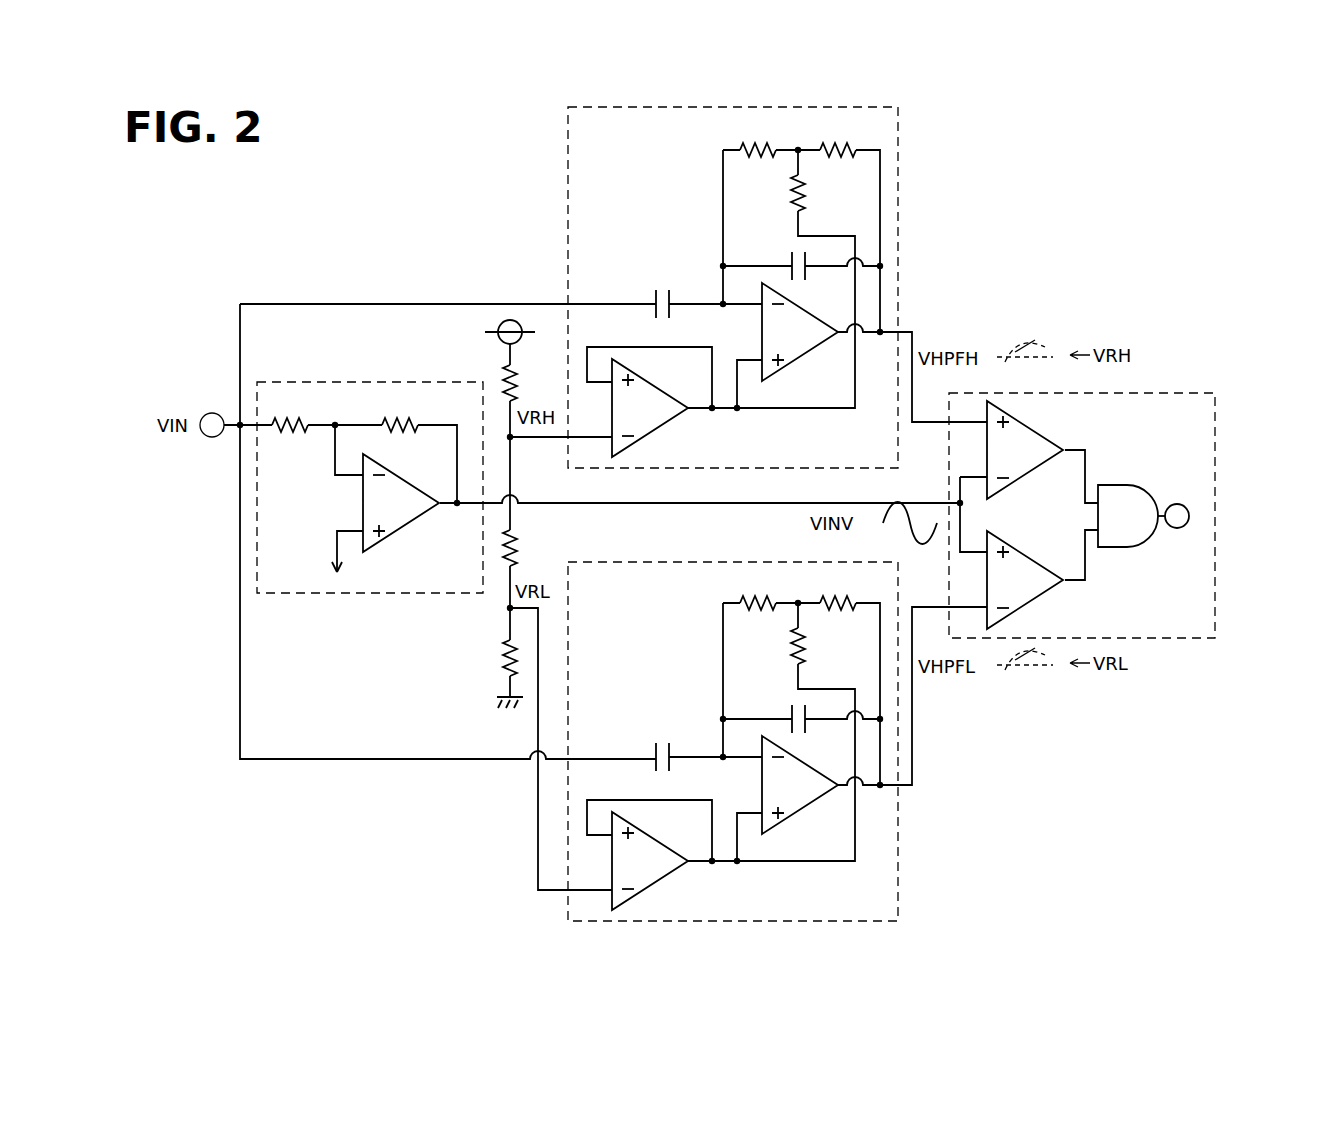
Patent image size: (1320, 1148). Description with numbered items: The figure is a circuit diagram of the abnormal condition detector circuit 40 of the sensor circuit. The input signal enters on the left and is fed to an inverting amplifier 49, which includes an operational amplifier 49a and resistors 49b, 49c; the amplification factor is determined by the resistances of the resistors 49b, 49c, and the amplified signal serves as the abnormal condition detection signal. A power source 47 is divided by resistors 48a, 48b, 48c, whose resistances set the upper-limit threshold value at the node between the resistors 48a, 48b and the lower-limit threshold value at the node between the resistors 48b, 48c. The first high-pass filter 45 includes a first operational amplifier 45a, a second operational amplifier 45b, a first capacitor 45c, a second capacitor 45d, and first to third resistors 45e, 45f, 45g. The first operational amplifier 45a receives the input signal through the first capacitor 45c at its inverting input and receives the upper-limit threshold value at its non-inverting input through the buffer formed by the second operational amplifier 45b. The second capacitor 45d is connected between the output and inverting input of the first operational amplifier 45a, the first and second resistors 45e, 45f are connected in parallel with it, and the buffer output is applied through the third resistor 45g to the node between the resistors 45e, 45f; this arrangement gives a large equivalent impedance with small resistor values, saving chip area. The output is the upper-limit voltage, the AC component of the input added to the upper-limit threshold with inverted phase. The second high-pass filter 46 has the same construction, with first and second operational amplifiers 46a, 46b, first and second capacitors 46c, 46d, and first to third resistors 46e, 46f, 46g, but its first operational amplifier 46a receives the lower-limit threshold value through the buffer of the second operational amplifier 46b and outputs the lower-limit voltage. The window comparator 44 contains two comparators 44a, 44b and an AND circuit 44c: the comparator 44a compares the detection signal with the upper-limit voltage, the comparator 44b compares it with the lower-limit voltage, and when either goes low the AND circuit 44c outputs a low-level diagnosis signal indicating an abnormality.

The abnormal condition detector circuit 40 is at (432, 205).
The window comparator 44 is at (1215, 617).
The comparator 44a is at (1035, 421).
The comparator 44b is at (1035, 553).
The AND circuit 44c is at (1118, 548).
The first high-pass filter 45 is at (898, 148).
The first operational amplifier 45a is at (806, 354).
The second operational amplifier 45b is at (667, 436).
The first capacitor 45c is at (660, 312).
The second capacitor 45d is at (810, 276).
The first resistor 45e is at (748, 152).
The second resistor 45f is at (838, 156).
The third resistor 45g is at (802, 210).
The second high-pass filter 46 is at (898, 863).
The first operational amplifier 46a is at (806, 807).
The second operational amplifier 46b is at (667, 889).
The first capacitor 46c is at (660, 765).
The second capacitor 46d is at (810, 729).
The first resistor 46e is at (748, 605).
The second resistor 46f is at (838, 609).
The third resistor 46g is at (802, 663).
The power source 47 is at (498, 330).
The resistor 48a is at (516, 385).
The resistor 48b is at (515, 527).
The resistor 48c is at (500, 677).
The inverting amplifier 49 is at (293, 594).
The operational amplifier 49a is at (410, 530).
The resistor 49b is at (298, 432).
The resistor 49c is at (418, 432).